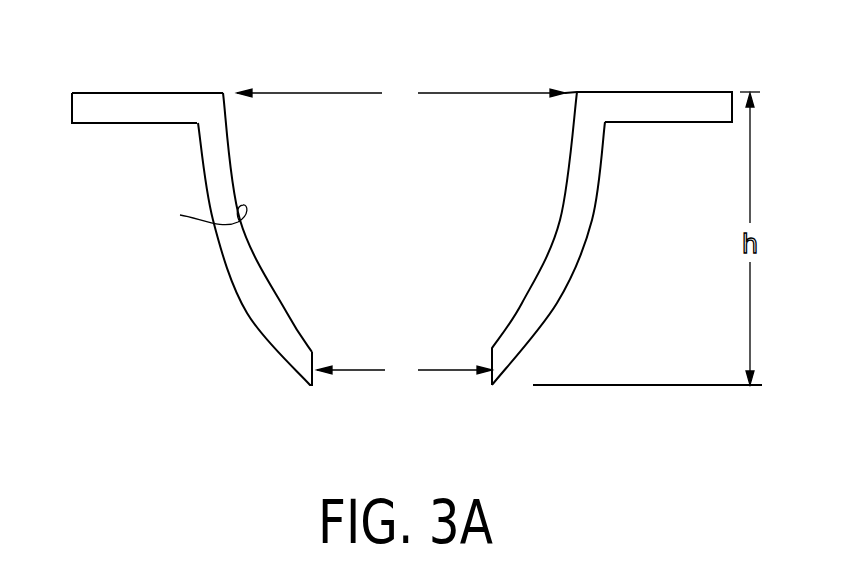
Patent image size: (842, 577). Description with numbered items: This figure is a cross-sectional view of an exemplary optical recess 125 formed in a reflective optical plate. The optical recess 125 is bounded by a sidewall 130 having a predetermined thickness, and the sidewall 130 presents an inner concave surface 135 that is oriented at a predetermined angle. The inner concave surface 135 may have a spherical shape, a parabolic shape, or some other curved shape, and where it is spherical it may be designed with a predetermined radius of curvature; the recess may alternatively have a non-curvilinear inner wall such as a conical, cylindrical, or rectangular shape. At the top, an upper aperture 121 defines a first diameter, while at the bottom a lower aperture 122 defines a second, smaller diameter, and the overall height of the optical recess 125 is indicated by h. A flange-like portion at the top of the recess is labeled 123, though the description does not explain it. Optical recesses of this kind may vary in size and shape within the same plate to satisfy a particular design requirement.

The upper aperture 121 is at (439, 63).
The lower aperture 122 is at (405, 417).
The flange 123 is at (139, 92).
The optical recess 125 is at (421, 243).
The sidewall 130 is at (245, 312).
The inner concave surface 135 is at (194, 216).